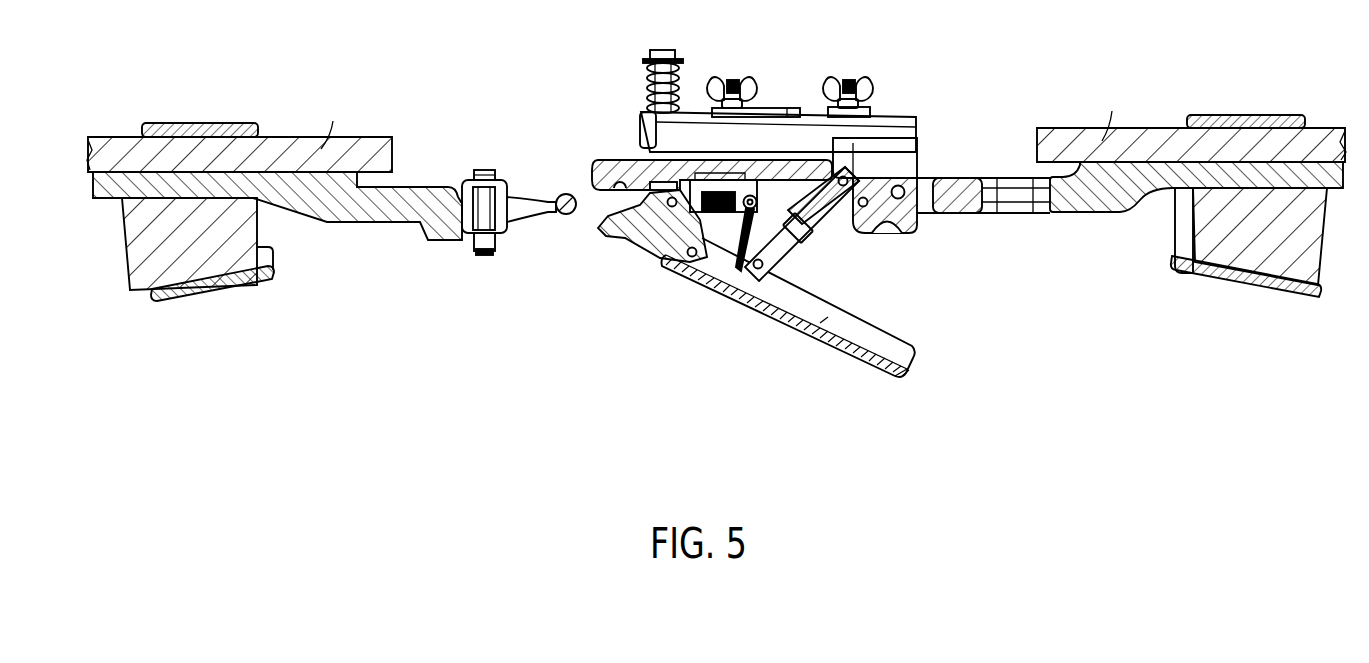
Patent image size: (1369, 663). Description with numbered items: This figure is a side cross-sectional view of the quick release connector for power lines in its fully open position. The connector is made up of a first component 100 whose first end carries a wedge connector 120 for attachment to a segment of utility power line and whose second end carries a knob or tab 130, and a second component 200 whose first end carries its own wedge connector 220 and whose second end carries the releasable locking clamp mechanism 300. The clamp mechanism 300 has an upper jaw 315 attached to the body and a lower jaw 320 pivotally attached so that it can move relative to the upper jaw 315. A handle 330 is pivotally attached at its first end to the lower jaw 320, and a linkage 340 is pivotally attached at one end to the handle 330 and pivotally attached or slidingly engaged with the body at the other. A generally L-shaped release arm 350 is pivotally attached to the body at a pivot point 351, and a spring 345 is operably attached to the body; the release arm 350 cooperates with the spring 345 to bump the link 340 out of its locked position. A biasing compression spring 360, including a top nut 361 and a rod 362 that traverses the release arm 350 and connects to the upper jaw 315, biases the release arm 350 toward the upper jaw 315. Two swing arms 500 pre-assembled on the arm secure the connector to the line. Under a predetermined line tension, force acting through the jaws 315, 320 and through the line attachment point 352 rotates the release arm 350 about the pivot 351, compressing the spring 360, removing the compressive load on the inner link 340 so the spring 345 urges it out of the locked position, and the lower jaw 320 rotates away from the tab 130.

The first component 100 is at (90, 367).
The wedge connector 120 is at (199, 274).
The tab 130 is at (567, 215).
The second component 200 is at (620, 392).
The wedge connector 220 is at (1214, 257).
The releasable locking clamp mechanism 300 is at (708, 331).
The upper jaw 315 is at (596, 165).
The lower jaw 320 is at (639, 240).
The handle 330 is at (898, 349).
The linkage 340 is at (800, 246).
The spring 345 is at (713, 268).
The release arm 350 is at (905, 138).
The pivot point 351 is at (865, 208).
The connecting point 352 is at (902, 214).
The biasing compression spring 360 is at (641, 58).
The top nut 361 is at (668, 51).
The rod 362 is at (648, 90).
The swing arms 500 is at (768, 108).